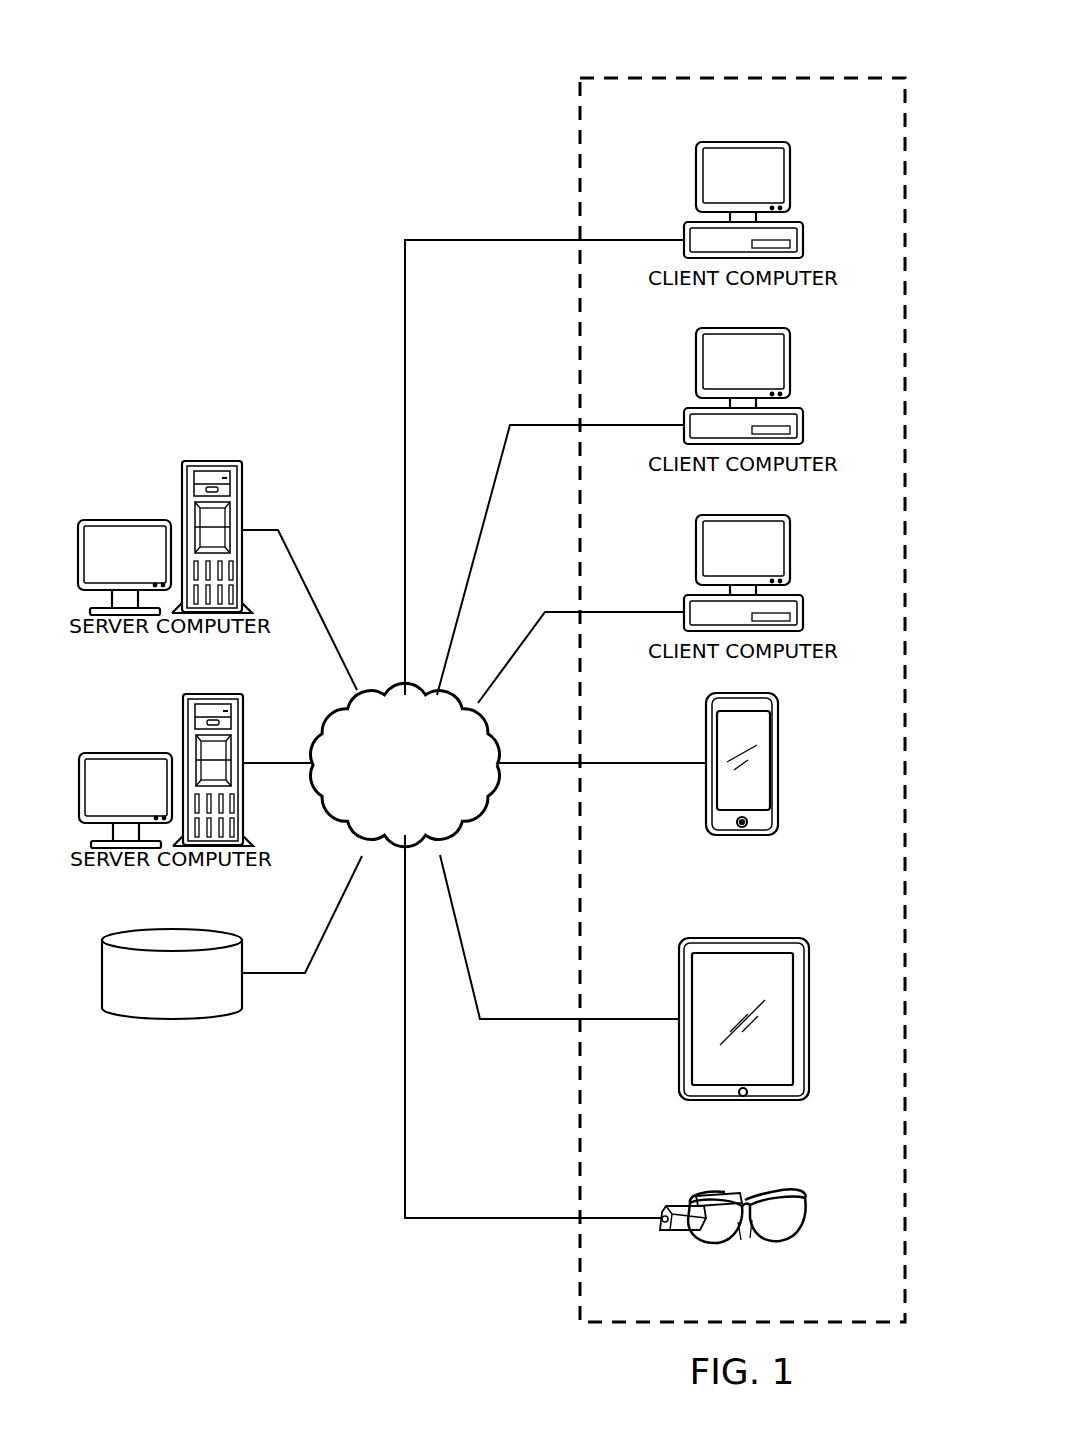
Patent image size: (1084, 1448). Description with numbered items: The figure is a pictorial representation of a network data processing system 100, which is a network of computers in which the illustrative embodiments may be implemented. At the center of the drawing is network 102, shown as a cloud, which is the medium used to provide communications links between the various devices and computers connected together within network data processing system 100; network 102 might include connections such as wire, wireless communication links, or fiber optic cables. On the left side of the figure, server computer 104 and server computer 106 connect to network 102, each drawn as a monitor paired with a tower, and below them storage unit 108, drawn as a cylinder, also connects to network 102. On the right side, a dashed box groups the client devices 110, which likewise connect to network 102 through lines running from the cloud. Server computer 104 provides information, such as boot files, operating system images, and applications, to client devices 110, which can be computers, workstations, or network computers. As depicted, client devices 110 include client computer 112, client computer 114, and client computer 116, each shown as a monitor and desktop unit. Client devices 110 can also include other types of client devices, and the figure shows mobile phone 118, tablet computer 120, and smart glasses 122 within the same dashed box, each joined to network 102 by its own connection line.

The network data processing system 100 is at (262, 178).
The network 102 is at (383, 795).
The server computer 104 is at (126, 518).
The server computer 106 is at (126, 751).
The storage unit 108 is at (170, 1022).
The client devices 110 is at (811, 78).
The client computer 112 is at (790, 176).
The client computer 114 is at (790, 362).
The client computer 116 is at (790, 549).
The mobile phone 118 is at (779, 782).
The tablet computer 120 is at (809, 1030).
The smart glasses 122 is at (808, 1230).